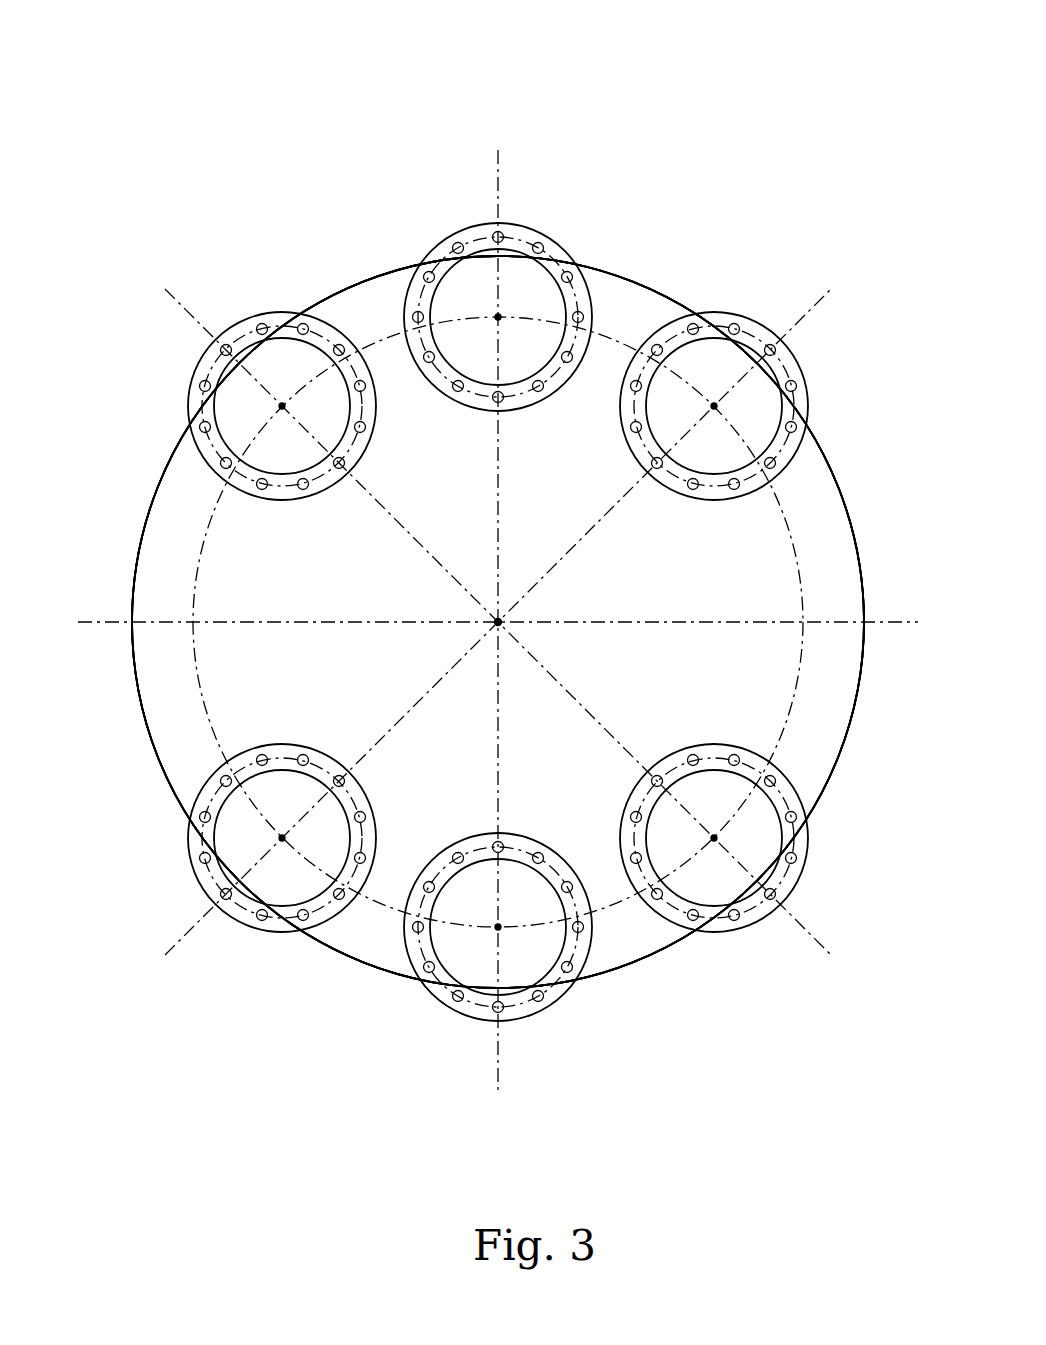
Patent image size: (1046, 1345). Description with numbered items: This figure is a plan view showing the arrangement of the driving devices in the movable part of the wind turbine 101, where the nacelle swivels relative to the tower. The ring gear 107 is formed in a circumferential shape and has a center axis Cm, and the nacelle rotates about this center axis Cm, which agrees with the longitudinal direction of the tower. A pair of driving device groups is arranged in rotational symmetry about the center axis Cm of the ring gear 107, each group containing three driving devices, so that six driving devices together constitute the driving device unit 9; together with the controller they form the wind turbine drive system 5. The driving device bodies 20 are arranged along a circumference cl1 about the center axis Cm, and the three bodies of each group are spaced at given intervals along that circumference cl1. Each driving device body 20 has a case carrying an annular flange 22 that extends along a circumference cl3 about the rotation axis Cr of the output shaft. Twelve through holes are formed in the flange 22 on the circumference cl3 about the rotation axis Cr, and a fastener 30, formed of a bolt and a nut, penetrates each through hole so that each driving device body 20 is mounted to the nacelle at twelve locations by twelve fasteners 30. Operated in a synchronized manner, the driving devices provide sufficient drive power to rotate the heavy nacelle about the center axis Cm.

The wind turbine 101 is at (725, 147).
The ring gear 107 is at (606, 290).
The wind turbine drive system 5 is at (385, 205).
The driving device unit 9 is at (345, 985).
The driving device body 20 is at (530, 298).
The flange 22 is at (457, 243).
The fastener 30 is at (500, 402).
The circumference cl1 is at (800, 555).
The circumference cl3 is at (524, 238).
The rotation axis Cr is at (498, 316).
The center axis Cm is at (500, 624).